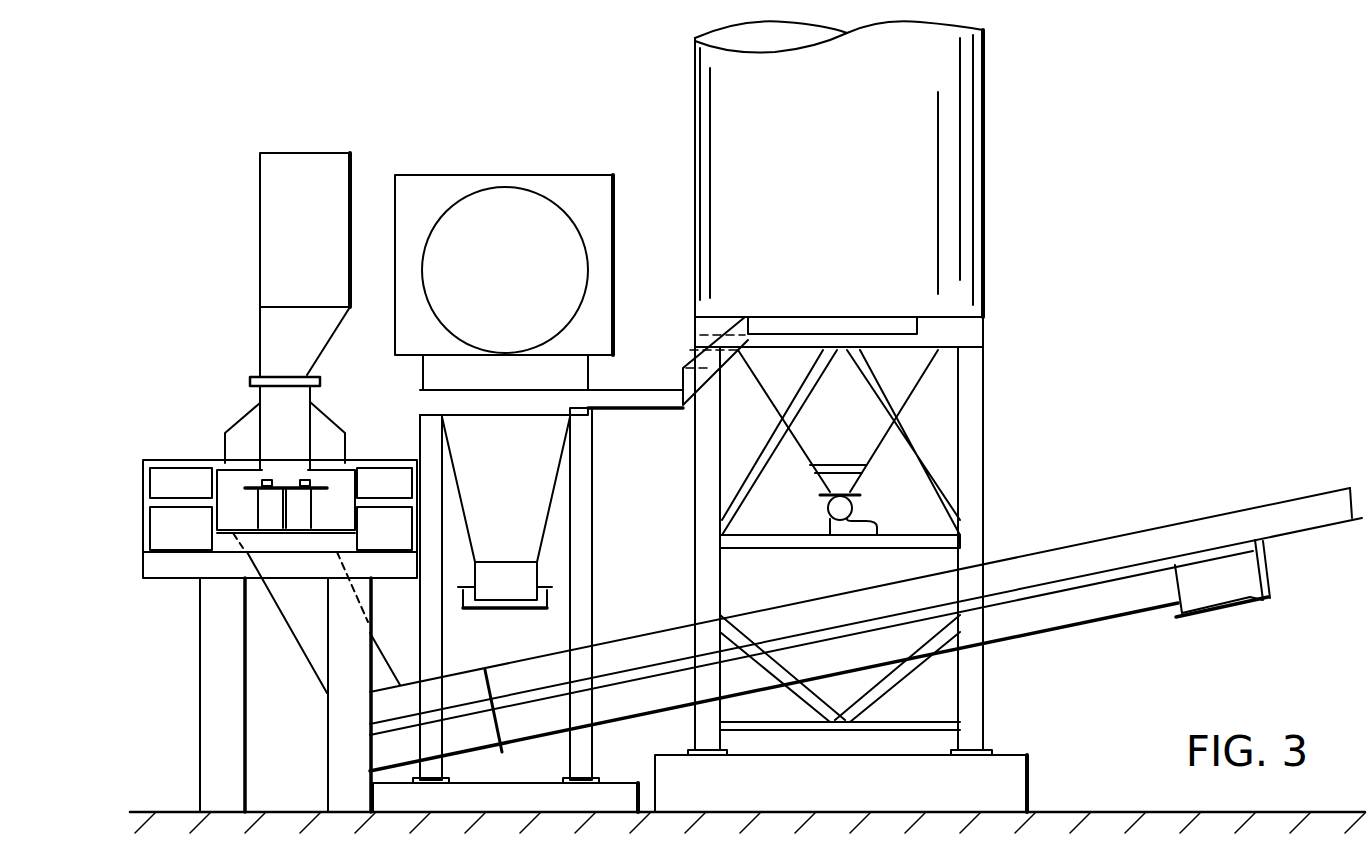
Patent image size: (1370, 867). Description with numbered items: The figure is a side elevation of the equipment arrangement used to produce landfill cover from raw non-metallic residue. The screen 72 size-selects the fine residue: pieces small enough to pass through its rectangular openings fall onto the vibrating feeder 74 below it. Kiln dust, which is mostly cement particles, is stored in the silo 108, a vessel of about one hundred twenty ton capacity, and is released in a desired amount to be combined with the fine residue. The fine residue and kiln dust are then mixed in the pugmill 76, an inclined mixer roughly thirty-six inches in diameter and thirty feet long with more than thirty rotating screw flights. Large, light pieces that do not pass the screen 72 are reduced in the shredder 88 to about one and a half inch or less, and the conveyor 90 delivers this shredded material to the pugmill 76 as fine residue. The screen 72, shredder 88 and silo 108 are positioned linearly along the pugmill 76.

The screen 72 is at (573, 205).
The vibrating feeder 74 is at (495, 589).
The pugmill 76 is at (1125, 602).
The shredder 88 is at (270, 345).
The conveyor 90 is at (291, 615).
The silo 108 is at (807, 172).